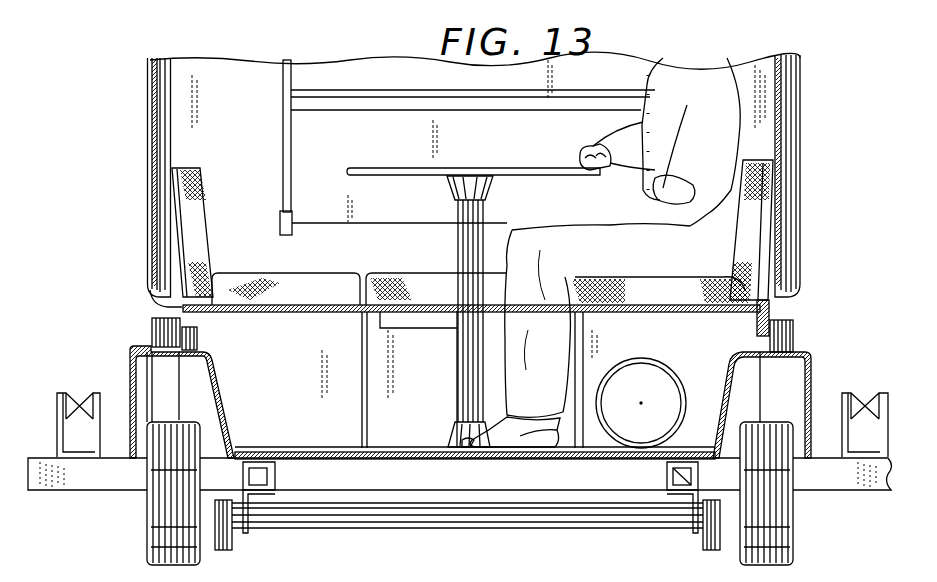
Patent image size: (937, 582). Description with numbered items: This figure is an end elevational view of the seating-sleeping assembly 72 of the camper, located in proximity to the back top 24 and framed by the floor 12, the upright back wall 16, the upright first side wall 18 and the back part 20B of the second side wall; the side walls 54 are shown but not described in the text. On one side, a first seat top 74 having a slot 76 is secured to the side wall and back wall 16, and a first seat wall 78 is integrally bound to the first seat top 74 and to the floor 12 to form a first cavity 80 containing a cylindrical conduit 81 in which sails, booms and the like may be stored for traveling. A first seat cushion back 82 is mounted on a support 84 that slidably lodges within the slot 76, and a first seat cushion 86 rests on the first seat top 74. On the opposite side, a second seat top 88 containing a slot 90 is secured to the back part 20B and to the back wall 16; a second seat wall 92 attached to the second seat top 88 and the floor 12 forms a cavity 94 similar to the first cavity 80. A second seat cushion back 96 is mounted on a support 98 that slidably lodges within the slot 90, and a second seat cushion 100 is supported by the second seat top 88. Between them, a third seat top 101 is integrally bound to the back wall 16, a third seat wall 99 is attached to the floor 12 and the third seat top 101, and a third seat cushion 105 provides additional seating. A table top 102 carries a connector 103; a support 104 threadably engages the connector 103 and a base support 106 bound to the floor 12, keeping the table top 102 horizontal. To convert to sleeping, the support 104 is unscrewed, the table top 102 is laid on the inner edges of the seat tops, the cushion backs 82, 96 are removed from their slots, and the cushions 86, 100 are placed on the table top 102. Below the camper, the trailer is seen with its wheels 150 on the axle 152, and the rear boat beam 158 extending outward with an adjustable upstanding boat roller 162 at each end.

The floor 12 is at (322, 451).
The upright back wall 16 is at (752, 357).
The upright first side wall 18 is at (803, 302).
The back part of the upright second side wall 20B is at (155, 310).
The back top 24 is at (437, 119).
The side wall 54 is at (163, 118).
The seating-sleeping assembly 72 is at (348, 125).
The first seat top 74 is at (695, 310).
The slot 76 is at (796, 266).
The first seat wall 78 is at (590, 357).
The first cavity 80 is at (677, 497).
The cylindrical conduit 81 is at (643, 428).
The first seat cushion back 82 is at (756, 193).
The support 84 is at (766, 245).
The first seat cushion 86 is at (668, 290).
The second seat top 88 is at (290, 313).
The slot 90 is at (196, 327).
The second seat wall 92 is at (362, 393).
The cavity 94 is at (212, 354).
The second seat cushion back 96 is at (189, 241).
The support 98 is at (178, 208).
The third seat wall 99 is at (397, 396).
The second seat cushion 100 is at (316, 292).
The third seat top 101 is at (382, 322).
The table top 102 is at (422, 168).
The connector 103 is at (475, 180).
The support 104 is at (456, 429).
The third seat cushion 105 is at (497, 292).
The base support 106 is at (475, 443).
The wheel 150 is at (176, 486).
The axle 152 is at (525, 512).
The rear boat beam 158 is at (108, 472).
The adjustable upstanding boat roller 162 is at (78, 405).